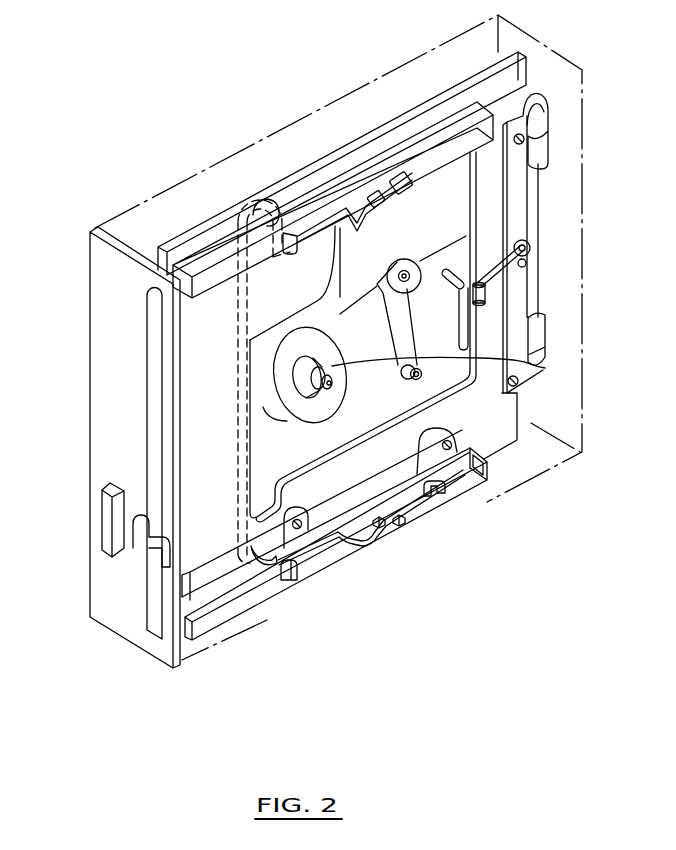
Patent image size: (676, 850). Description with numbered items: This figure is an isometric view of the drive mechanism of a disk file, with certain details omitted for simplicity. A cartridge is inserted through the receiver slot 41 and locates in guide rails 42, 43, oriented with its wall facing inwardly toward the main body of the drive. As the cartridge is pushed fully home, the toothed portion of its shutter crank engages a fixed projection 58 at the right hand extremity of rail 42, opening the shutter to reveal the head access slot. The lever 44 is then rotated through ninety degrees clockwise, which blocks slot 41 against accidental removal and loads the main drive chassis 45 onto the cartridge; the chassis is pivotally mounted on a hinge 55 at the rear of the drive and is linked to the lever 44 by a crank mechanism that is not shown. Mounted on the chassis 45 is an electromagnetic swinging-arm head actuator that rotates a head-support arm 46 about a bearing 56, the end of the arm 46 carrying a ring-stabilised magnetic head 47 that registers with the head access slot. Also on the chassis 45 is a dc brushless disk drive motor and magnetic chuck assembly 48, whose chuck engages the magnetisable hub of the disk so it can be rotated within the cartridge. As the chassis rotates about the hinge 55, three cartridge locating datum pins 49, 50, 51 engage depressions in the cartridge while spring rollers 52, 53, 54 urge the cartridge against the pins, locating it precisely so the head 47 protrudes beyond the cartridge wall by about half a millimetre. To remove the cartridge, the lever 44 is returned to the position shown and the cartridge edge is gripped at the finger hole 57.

The receiver slot 41 is at (148, 640).
The guide rail 42 is at (437, 505).
The guide rail 43 is at (442, 128).
The lever 44 is at (103, 517).
The main drive chassis 45 is at (240, 333).
The head-support arm 46 is at (545, 368).
The magnetic head 47 is at (418, 376).
The disk drive motor and magnetic chuck assembly 48 is at (320, 364).
The cartridge locating datum pin 49 is at (281, 218).
The cartridge locating datum pin 50 is at (457, 274).
The cartridge locating datum pin 51 is at (267, 570).
The spring roller 52 is at (294, 254).
The spring roller 53 is at (483, 289).
The spring roller 54 is at (293, 580).
The hinge 55 is at (550, 154).
The bearing 56 is at (408, 258).
The finger hole 57 is at (150, 555).
The fixed projection 58 is at (443, 488).